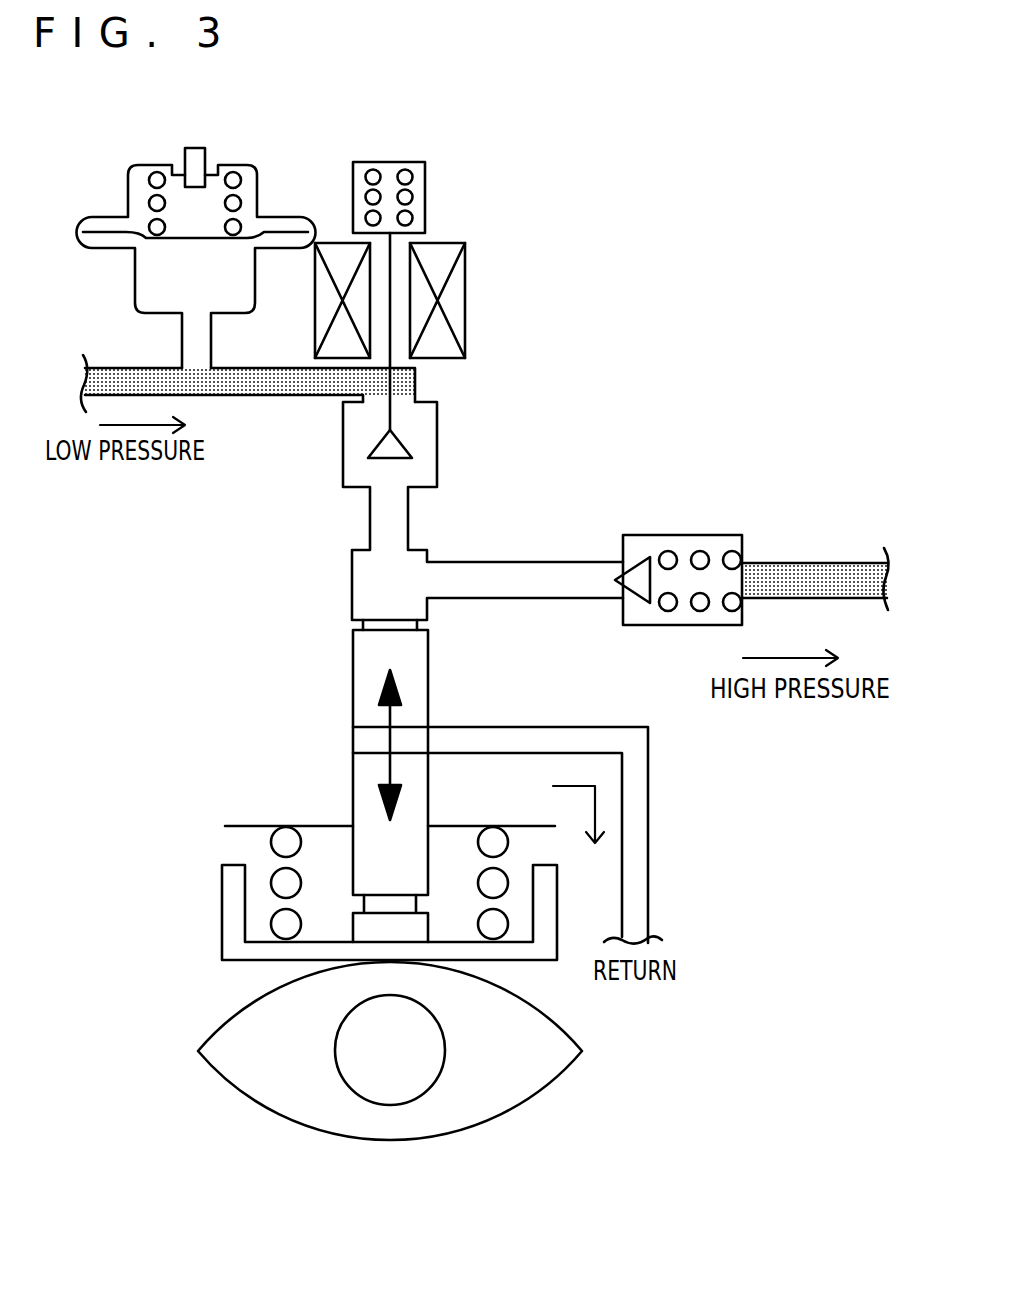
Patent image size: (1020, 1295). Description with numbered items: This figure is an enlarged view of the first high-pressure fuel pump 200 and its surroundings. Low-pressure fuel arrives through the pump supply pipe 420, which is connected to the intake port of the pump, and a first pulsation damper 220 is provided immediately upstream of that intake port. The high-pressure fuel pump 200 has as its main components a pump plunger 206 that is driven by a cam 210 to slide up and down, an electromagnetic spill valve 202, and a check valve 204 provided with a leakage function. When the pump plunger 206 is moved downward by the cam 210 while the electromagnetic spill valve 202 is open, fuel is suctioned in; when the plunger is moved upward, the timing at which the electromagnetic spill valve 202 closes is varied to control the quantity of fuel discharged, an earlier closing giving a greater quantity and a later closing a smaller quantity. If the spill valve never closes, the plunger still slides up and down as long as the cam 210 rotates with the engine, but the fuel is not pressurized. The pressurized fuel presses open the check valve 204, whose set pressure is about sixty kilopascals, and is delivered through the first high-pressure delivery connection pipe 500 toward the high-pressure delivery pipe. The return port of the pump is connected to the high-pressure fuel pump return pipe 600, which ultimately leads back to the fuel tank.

The first high-pressure fuel pump 200 is at (503, 516).
The electromagnetic spill valve 202 is at (490, 285).
The check valve 204 is at (680, 535).
The pump plunger 206 is at (312, 791).
The cam 210 is at (542, 1107).
The first pulsation damper 220 is at (237, 163).
The pump supply pipe 420 is at (255, 383).
The first high-pressure delivery connection pipe 500 is at (797, 567).
The high-pressure fuel pump return pipe 600 is at (637, 802).